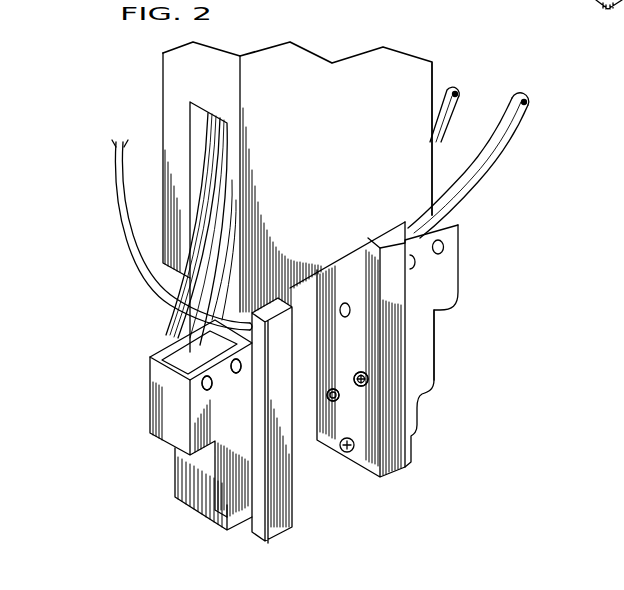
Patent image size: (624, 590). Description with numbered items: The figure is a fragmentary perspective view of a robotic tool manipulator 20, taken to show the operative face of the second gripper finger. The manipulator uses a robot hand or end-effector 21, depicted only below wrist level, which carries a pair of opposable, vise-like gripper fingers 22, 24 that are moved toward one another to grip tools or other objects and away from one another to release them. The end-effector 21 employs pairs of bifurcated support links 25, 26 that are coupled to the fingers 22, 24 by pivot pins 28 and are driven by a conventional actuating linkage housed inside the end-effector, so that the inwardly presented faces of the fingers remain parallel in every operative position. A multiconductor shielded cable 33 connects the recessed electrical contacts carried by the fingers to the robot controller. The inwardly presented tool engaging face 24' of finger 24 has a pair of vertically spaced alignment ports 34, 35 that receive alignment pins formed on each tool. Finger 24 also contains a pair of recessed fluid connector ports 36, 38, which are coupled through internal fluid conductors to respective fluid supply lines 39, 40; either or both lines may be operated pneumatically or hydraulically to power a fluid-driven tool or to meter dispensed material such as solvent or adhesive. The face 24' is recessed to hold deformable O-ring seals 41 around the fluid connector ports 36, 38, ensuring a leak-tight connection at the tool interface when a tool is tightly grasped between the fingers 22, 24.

The robotic tool manipulator 20 is at (137, 297).
The end-effector 21 is at (417, 89).
The gripper finger 22 is at (284, 540).
The gripper finger 24 is at (389, 351).
The tool engaging face 24' is at (421, 345).
The bifurcated support link 25 is at (202, 222).
The bifurcated support link 26 is at (400, 234).
The pivot pin 28 is at (236, 374).
The multiconductor shielded cable 33 is at (118, 216).
The alignment port 34 is at (353, 313).
The alignment port 35 is at (350, 452).
The fluid connector port 36 is at (369, 377).
The fluid connector port 38 is at (336, 389).
The fluid supply line 39 is at (493, 149).
The fluid supply line 40 is at (444, 111).
The O-ring seal 41 is at (338, 397).